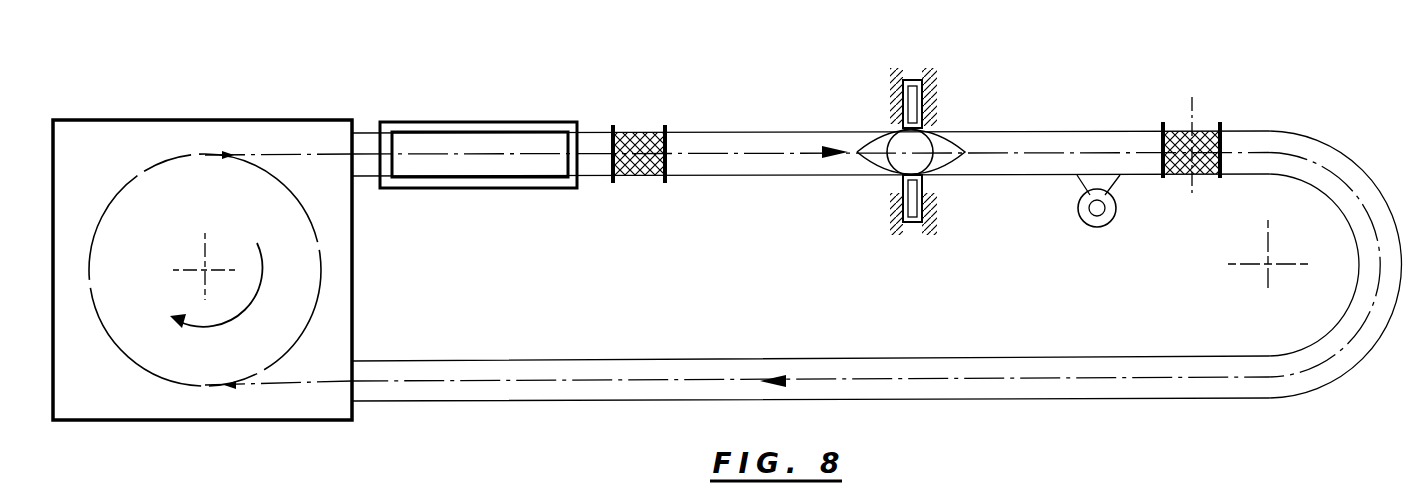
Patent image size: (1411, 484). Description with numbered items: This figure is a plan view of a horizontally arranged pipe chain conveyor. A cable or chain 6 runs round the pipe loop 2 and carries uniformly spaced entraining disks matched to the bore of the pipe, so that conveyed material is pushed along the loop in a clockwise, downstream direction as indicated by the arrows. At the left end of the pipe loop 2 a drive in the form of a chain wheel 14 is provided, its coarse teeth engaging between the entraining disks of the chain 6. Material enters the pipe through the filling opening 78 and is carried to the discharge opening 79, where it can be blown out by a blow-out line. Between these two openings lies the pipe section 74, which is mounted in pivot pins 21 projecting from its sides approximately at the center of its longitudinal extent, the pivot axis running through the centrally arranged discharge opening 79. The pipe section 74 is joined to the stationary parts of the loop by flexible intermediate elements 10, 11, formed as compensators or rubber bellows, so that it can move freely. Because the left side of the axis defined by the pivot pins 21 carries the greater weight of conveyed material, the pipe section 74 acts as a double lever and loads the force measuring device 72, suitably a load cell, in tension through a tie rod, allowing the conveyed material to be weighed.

The pipe loop 2 is at (1268, 108).
The cable or chain 6 is at (303, 152).
The chain wheel 14 is at (271, 187).
The pipe section 74 is at (743, 138).
The filling opening 78 is at (477, 145).
The flexible intermediate element 10 is at (627, 140).
The discharge opening 79 is at (907, 142).
The pivot pins 21 is at (921, 122).
The flexible intermediate element 11 is at (1182, 130).
The force measuring device 72 is at (1078, 208).